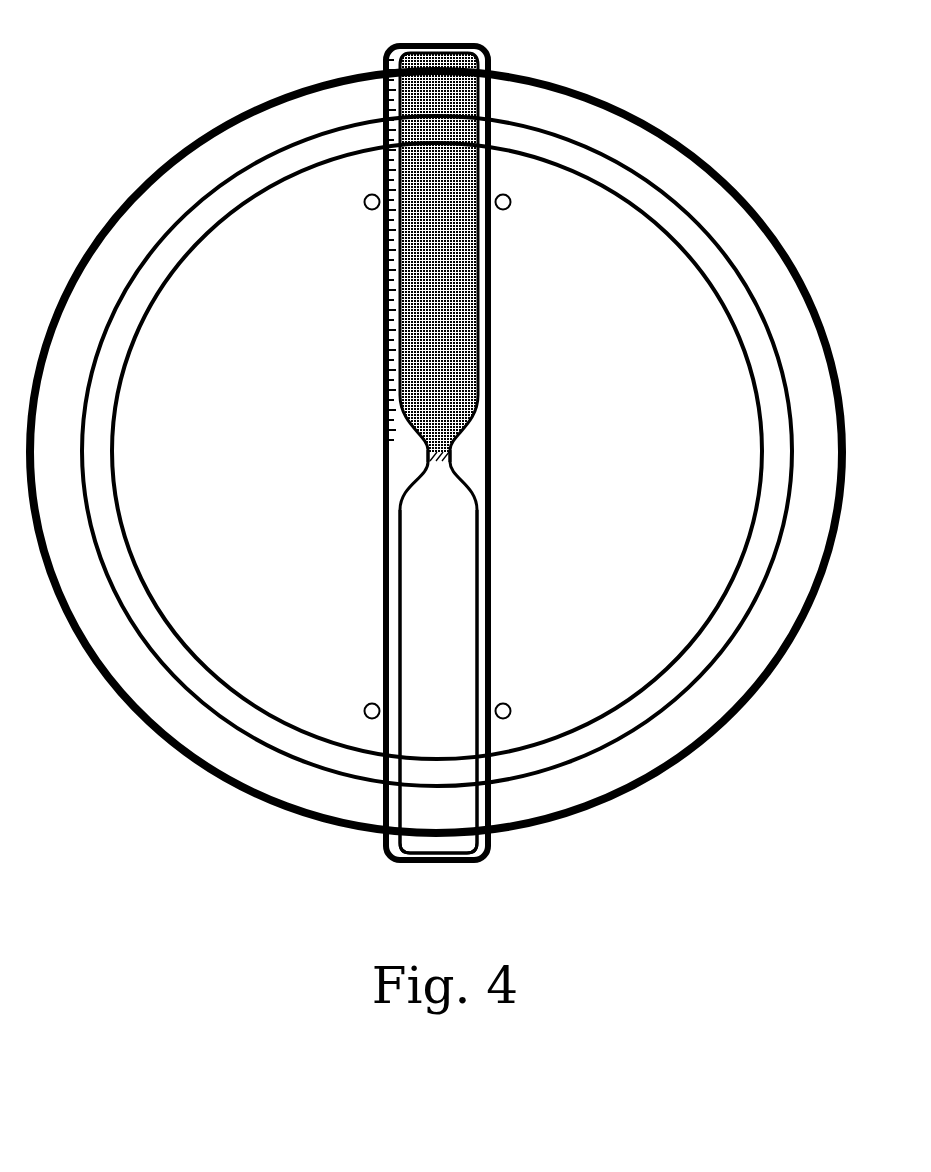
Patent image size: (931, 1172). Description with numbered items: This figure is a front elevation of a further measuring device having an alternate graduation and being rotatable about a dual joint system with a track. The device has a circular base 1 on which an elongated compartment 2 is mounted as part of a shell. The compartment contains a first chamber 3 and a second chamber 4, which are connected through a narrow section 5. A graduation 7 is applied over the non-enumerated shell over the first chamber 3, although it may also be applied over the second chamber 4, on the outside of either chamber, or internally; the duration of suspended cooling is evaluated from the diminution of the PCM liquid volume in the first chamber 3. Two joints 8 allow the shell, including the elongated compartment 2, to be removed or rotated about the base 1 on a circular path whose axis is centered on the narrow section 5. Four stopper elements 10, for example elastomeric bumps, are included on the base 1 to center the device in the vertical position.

The circular base 1 is at (180, 182).
The elongated compartment 2 is at (478, 57).
The first chamber 3 is at (462, 331).
The second chamber 4 is at (410, 603).
The narrow section 5 is at (415, 458).
The graduation 7 is at (383, 258).
The joints 8 is at (385, 128).
The stopper elements 10 is at (505, 703).